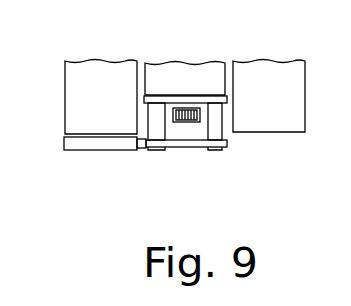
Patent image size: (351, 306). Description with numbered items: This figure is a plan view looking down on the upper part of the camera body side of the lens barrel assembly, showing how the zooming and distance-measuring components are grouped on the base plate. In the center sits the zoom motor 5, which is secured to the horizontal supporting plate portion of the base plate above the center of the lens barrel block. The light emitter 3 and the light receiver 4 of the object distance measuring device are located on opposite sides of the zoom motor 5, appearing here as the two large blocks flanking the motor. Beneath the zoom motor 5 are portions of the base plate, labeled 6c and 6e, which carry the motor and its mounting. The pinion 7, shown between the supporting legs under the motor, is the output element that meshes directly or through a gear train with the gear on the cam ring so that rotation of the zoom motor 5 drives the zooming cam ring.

The light emitter 3 is at (286, 72).
The light receiver 4 is at (75, 83).
The zoom motor 5 is at (212, 67).
The plate 6c is at (175, 96).
The bottom plate 6e is at (193, 147).
The pinion 7 is at (200, 115).